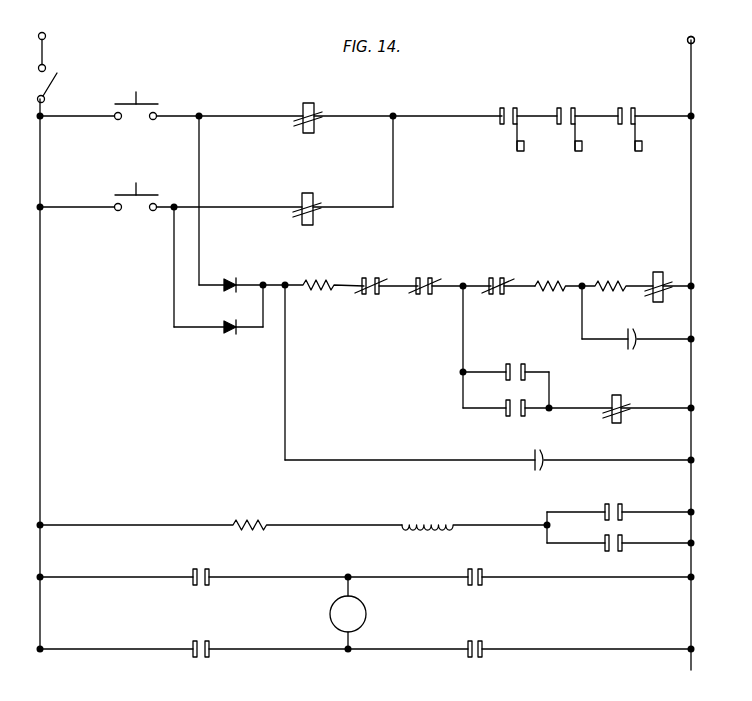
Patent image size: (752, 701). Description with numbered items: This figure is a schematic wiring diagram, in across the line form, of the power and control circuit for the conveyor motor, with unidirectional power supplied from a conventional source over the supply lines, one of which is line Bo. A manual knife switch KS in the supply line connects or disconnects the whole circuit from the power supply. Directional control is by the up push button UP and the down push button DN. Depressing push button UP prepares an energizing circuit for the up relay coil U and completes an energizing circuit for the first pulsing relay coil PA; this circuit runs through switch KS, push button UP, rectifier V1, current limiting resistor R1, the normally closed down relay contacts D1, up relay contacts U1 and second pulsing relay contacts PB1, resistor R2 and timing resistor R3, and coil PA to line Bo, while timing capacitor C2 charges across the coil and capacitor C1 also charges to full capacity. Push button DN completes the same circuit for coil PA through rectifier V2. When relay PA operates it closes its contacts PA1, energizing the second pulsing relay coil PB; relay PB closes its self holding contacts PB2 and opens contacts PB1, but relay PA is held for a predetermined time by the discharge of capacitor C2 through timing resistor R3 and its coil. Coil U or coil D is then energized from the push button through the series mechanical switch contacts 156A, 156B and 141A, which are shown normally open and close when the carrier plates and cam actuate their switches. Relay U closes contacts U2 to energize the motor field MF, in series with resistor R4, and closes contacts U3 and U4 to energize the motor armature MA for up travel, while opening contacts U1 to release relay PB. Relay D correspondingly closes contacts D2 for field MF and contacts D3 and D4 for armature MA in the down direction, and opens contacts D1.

The supply line Bo is at (698, 32).
The manual knife switch KS is at (58, 73).
The up push button UP is at (99, 96).
The down push button DN is at (99, 188).
The up relay coil U is at (308, 106).
The down relay coil D is at (307, 196).
The mechanical switch contacts 156A is at (512, 110).
The mechanical switch contacts 156B is at (570, 110).
The cam actuated switch contacts 141A is at (630, 110).
The rectifier V1 is at (232, 274).
The rectifier V2 is at (232, 332).
The current limiting resistor R1 is at (324, 274).
The down relay contacts D1 is at (372, 282).
The up relay contacts U1 is at (428, 282).
The second pulsing relay contacts PB1 is at (497, 282).
The resistor R2 is at (558, 274).
The timing resistor R3 is at (617, 276).
The first pulsing relay coil PA is at (656, 272).
The timing capacitor C2 is at (628, 328).
The first pulsing relay contacts PA1 is at (514, 366).
The second pulsing relay contacts PB2 is at (517, 412).
The second pulsing relay coil PB is at (622, 405).
The capacitor C1 is at (535, 470).
The resistor R4 is at (221, 515).
The motor field windings MF is at (474, 515).
The up relay contacts U2 is at (613, 508).
The down relay contacts D2 is at (613, 552).
The up relay contacts U3 is at (200, 574).
The down relay contacts D4 is at (579, 568).
The conveyor motor armature MA is at (348, 613).
The down relay contacts D3 is at (204, 652).
The up relay contacts U4 is at (476, 652).